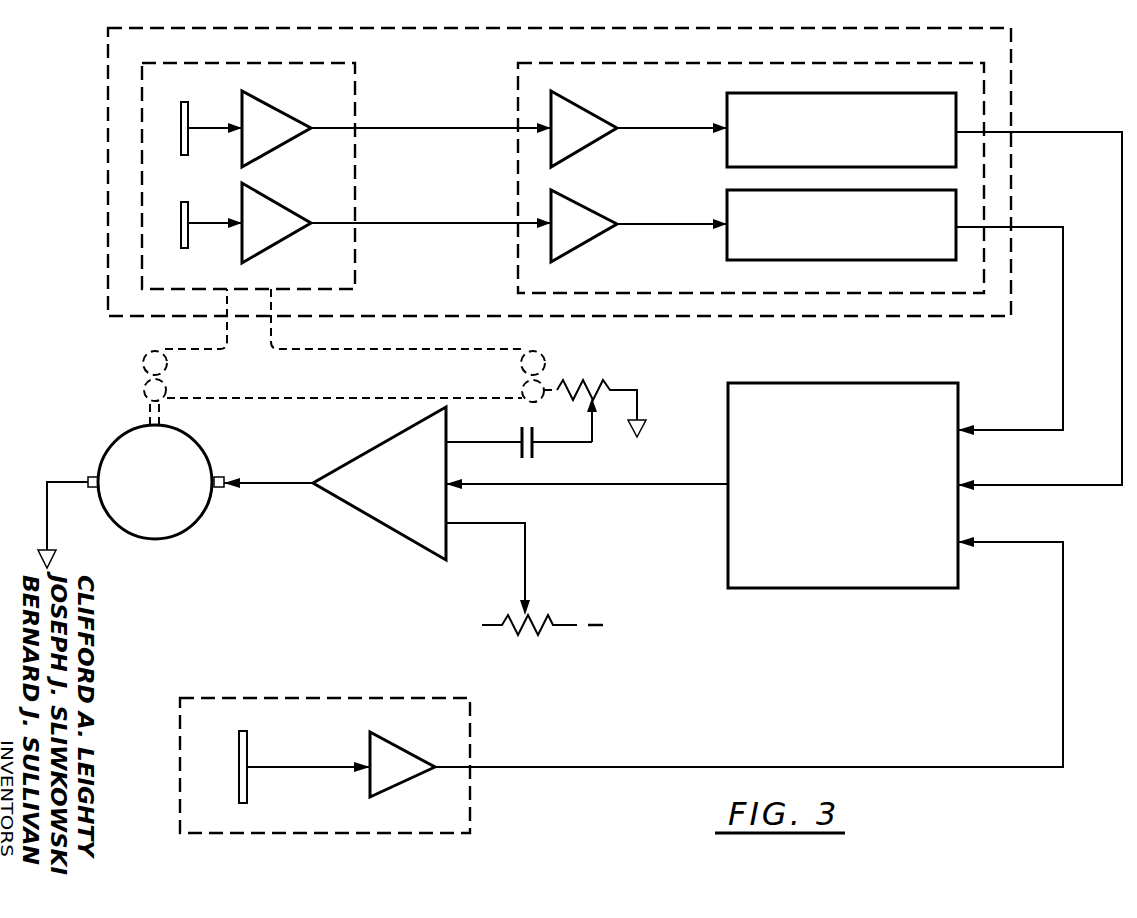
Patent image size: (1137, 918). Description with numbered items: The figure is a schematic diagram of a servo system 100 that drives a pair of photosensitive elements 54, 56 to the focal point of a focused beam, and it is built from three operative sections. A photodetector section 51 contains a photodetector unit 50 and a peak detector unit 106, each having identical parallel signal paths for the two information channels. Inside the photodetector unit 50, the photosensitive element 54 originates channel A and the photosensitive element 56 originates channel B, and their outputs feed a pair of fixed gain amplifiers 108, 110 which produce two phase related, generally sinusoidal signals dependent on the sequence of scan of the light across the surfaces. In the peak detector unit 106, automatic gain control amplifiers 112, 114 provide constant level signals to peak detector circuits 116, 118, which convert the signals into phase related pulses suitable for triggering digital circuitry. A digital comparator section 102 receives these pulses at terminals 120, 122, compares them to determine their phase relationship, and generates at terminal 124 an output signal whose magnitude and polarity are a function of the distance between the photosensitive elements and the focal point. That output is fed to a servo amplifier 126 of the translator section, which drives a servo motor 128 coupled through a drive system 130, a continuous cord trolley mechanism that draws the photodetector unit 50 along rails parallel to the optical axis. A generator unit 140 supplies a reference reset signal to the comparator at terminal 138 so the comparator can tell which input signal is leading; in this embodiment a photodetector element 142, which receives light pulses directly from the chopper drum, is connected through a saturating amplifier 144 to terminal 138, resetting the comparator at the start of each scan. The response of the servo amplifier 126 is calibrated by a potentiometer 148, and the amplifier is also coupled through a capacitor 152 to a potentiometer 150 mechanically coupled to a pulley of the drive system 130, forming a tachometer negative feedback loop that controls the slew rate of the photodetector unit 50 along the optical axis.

The photodetector unit 50 is at (355, 96).
The photodetector section 51 is at (108, 112).
The photosensitive element 54 is at (181, 238).
The photosensitive element 56 is at (181, 112).
The servo system 100 is at (1032, 108).
The comparator section 102 is at (798, 383).
The peak detector unit 106 is at (518, 276).
The fixed gain amplifier 108 is at (266, 250).
The fixed gain amplifier 110 is at (266, 101).
The automatic gain control amplifier 112 is at (583, 245).
The automatic gain control amplifier 114 is at (585, 150).
The peak detector circuit 116 is at (727, 255).
The peak detector circuit 118 is at (727, 100).
The terminal 120 is at (963, 427).
The terminal 122 is at (963, 484).
The terminal 124 is at (728, 490).
The servo amplifier 126 is at (352, 461).
The servo motor 128 is at (115, 440).
The drive system 130 is at (253, 397).
The terminal 138 is at (963, 541).
The generator unit 140 is at (365, 697).
The photodetector element 142 is at (243, 735).
The saturating amplifier 144 is at (410, 752).
The potentiometer 148 is at (530, 632).
The potentiometer 150 is at (587, 385).
The capacitor 152 is at (545, 452).